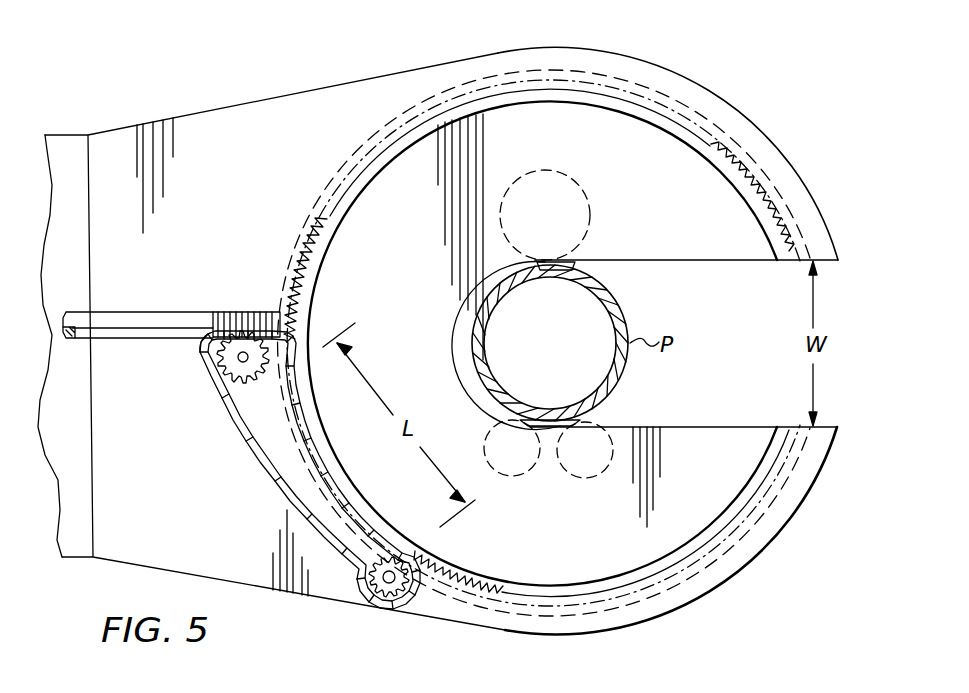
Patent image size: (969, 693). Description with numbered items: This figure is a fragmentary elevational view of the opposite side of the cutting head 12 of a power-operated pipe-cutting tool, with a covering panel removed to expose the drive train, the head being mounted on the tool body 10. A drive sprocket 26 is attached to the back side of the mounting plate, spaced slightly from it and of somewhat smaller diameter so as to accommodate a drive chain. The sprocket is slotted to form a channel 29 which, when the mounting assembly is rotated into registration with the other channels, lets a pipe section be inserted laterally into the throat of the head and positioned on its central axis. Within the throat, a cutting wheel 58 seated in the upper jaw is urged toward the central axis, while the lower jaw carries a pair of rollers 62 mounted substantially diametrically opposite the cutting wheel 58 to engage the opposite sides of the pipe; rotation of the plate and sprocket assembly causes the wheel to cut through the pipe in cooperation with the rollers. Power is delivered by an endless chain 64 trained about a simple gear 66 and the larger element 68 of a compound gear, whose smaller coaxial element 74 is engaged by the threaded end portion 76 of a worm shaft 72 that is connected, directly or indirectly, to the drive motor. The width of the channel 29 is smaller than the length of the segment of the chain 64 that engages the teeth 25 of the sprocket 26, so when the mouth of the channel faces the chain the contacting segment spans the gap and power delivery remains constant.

The body 10 is at (46, 134).
The cutting head 12 is at (737, 108).
The teeth 25 is at (305, 216).
The drive sprocket 26 is at (713, 178).
The channel 29 is at (690, 259).
The cutting wheel 58 is at (565, 282).
The rollers 62 is at (572, 424).
The endless chain 64 is at (268, 468).
The simple gear 66 is at (386, 592).
The larger element of a compound gear 68 is at (205, 373).
The worm shaft 72 is at (148, 324).
The smaller coaxial element 74 is at (250, 384).
The threaded end portion 76 is at (238, 313).